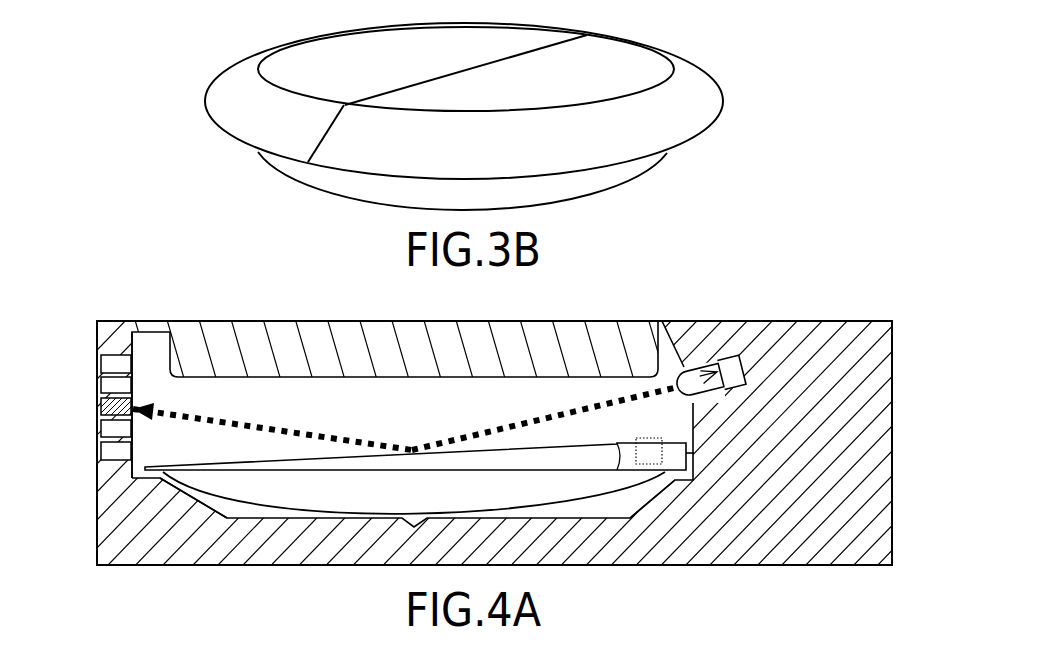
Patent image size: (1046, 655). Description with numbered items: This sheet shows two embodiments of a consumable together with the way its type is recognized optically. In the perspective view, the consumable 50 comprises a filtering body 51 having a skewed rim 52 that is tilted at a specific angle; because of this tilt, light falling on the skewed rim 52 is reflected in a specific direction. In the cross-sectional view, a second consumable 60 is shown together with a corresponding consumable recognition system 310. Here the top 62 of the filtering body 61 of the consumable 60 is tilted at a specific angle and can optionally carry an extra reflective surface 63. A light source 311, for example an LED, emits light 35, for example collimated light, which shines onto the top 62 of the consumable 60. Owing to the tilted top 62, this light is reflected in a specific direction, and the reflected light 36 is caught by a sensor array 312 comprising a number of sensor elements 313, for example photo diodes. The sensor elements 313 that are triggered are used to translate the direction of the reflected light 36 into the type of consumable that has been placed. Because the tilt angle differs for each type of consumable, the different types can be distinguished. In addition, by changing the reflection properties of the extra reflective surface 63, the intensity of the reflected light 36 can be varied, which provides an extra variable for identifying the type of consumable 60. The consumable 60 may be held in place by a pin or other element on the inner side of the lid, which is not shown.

In FIG. 3B, the consumable 50 is at (726, 57).
In FIG. 3B, the filtering body 51 is at (291, 172).
In FIG. 3B, the skewed rim 52 is at (637, 140).
In FIG. 4A, the consumable recognition system 310 is at (128, 316).
In FIG. 4A, the light source 311 is at (703, 368).
In FIG. 4A, the sensor array 312 is at (111, 345).
In FIG. 4A, the sensor elements 313 is at (100, 451).
In FIG. 4A, the light 35 is at (510, 429).
In FIG. 4A, the reflected light 36 is at (261, 425).
In FIG. 4A, the consumable 60 is at (212, 513).
In FIG. 4A, the filtering body 61 is at (258, 505).
In FIG. 4A, the top 62 is at (693, 454).
In FIG. 4A, the extra reflective surface 63 is at (583, 444).